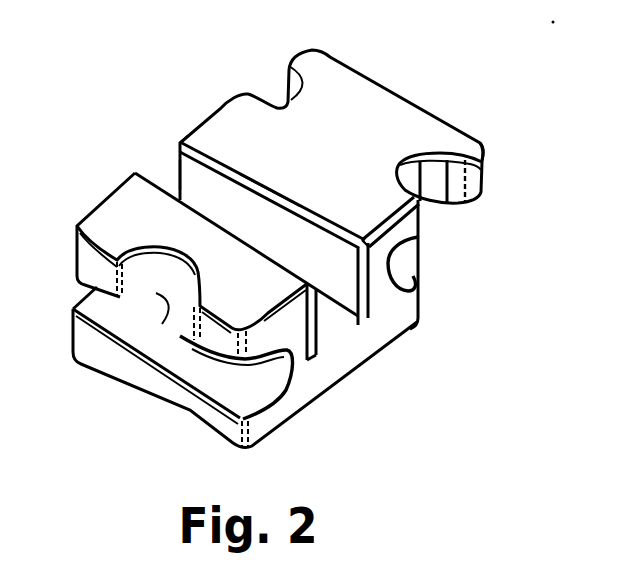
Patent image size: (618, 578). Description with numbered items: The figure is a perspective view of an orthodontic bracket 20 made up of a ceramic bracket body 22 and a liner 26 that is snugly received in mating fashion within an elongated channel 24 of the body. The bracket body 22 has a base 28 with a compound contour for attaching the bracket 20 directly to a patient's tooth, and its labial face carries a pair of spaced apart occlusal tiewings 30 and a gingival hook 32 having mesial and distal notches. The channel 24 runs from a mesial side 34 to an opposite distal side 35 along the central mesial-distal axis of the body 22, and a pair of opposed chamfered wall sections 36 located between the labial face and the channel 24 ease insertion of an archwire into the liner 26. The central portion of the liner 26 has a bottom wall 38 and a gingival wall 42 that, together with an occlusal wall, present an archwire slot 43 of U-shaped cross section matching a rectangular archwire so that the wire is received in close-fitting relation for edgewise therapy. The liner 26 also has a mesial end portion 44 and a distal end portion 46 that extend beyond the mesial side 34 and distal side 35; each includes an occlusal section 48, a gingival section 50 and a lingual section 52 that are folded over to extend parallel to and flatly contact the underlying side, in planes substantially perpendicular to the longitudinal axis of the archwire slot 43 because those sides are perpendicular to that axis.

The orthodontic bracket 20 is at (503, 148).
The ceramic bracket body 22 is at (190, 118).
The elongated channel 24 is at (318, 238).
The liner 26 is at (168, 172).
The base 28 is at (287, 424).
The occlusal tiewings 30 is at (193, 343).
The gingival hook 32 is at (397, 106).
The mesial side 34 is at (406, 318).
The distal side 35 is at (85, 206).
The chamfered wall sections 36 is at (258, 182).
The bottom wall 38 is at (358, 323).
The gingival wall 42 is at (212, 180).
The archwire slot 43 is at (325, 332).
The mesial end portion 44 is at (392, 247).
The distal end portion 46 is at (165, 150).
The occlusal section 48 is at (308, 340).
The gingival section 50 is at (383, 267).
The lingual section 52 is at (323, 330).